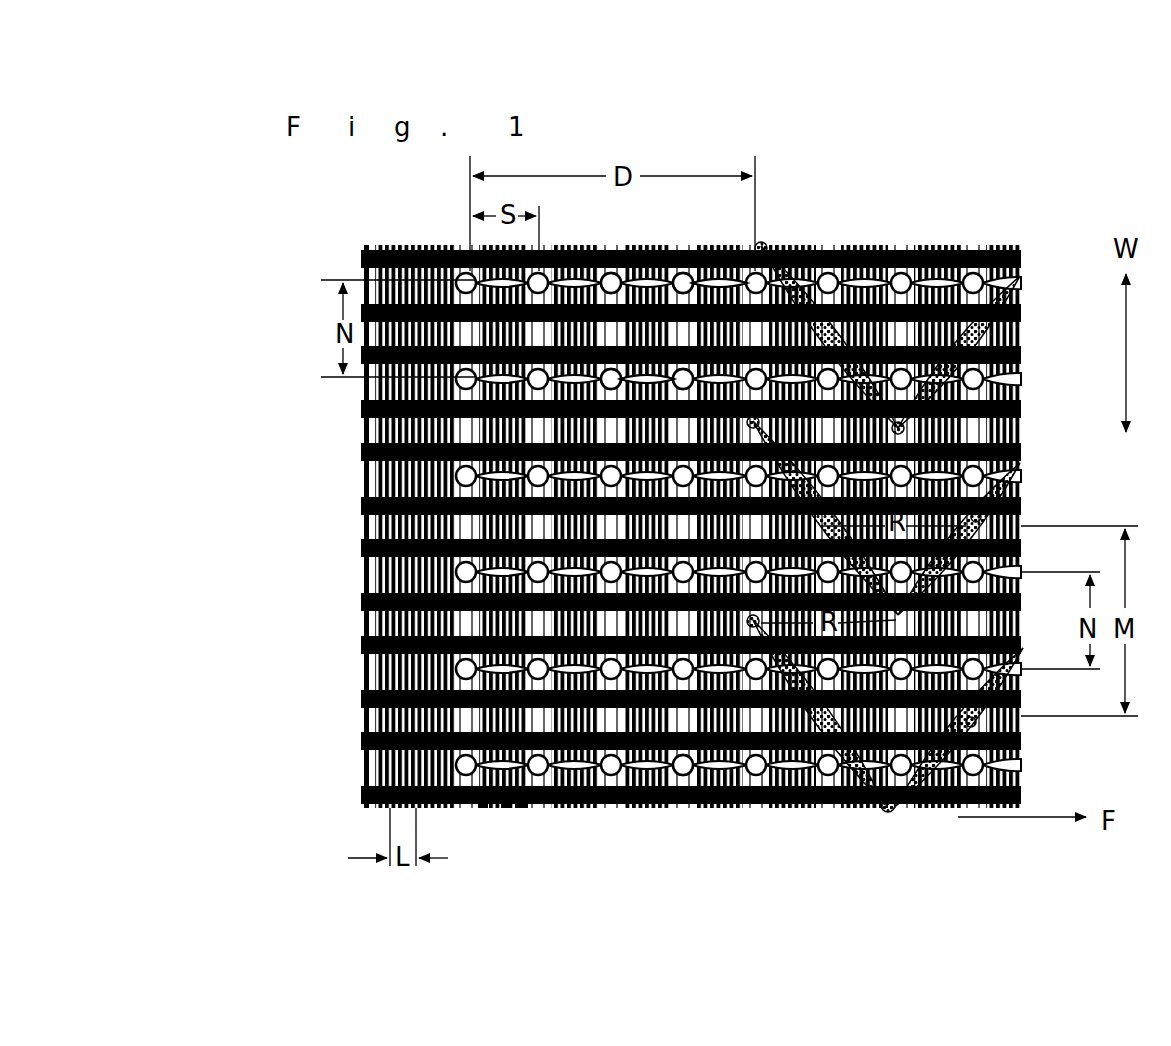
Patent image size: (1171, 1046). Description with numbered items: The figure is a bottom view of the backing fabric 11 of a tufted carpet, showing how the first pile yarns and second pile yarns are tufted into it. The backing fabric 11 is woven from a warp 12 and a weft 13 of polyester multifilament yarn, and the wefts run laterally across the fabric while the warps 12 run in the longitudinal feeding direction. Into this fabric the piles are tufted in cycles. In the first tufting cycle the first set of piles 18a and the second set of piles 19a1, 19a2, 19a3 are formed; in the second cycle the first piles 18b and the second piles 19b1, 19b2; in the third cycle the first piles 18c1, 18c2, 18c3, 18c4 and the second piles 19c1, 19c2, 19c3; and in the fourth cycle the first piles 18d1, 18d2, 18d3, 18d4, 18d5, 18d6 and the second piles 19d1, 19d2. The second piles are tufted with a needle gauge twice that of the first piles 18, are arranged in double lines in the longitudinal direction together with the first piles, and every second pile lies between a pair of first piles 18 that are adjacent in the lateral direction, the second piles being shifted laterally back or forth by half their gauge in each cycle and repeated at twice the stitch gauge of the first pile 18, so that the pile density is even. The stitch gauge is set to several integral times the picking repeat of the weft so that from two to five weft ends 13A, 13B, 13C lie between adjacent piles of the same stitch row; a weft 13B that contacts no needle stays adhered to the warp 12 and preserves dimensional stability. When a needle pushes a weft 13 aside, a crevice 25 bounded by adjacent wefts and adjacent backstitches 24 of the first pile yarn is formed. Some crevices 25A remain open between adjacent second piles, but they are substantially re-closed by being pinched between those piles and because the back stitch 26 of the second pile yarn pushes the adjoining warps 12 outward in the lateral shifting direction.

The backing fabric 11 is at (410, 228).
The warp 12 is at (348, 492).
The weft 13 is at (355, 566).
The weft 13A is at (516, 802).
The weft 13B is at (499, 805).
The weft 13C is at (474, 799).
The first pile 18 is at (654, 499).
The first set of piles 18a is at (678, 366).
The first set of piles 18b is at (599, 368).
The first set of piles 18c1 is at (470, 740).
The first set of piles 18c2 is at (455, 640).
The first set of piles 18c3 is at (470, 600).
The weft yarn 18c4 is at (468, 498).
The first set of piles 18d1 is at (455, 775).
The first set of piles 18d2 is at (457, 662).
The first set of piles 18d3 is at (455, 563).
The first set of piles 18d4 is at (450, 466).
The first set of piles 18d5 is at (450, 377).
The first set of piles 18d6 is at (450, 272).
The second set of piles 19a1 is at (965, 716).
The second set of piles 19a2 is at (972, 508).
The second set of piles 19a3 is at (979, 322).
The second set of piles 19b1 is at (893, 620).
The second set of piles 19b2 is at (903, 417).
The second set of piles 19c1 is at (815, 705).
The second set of piles 19c2 is at (989, 477).
The second set of piles 19c3 is at (802, 305).
The second set of piles 19d1 is at (736, 625).
The second set of piles 19d2 is at (733, 414).
The backstitch 24 is at (649, 366).
The crevice 25 is at (455, 617).
The crevice 25A is at (740, 527).
The back stitch 26 is at (858, 795).